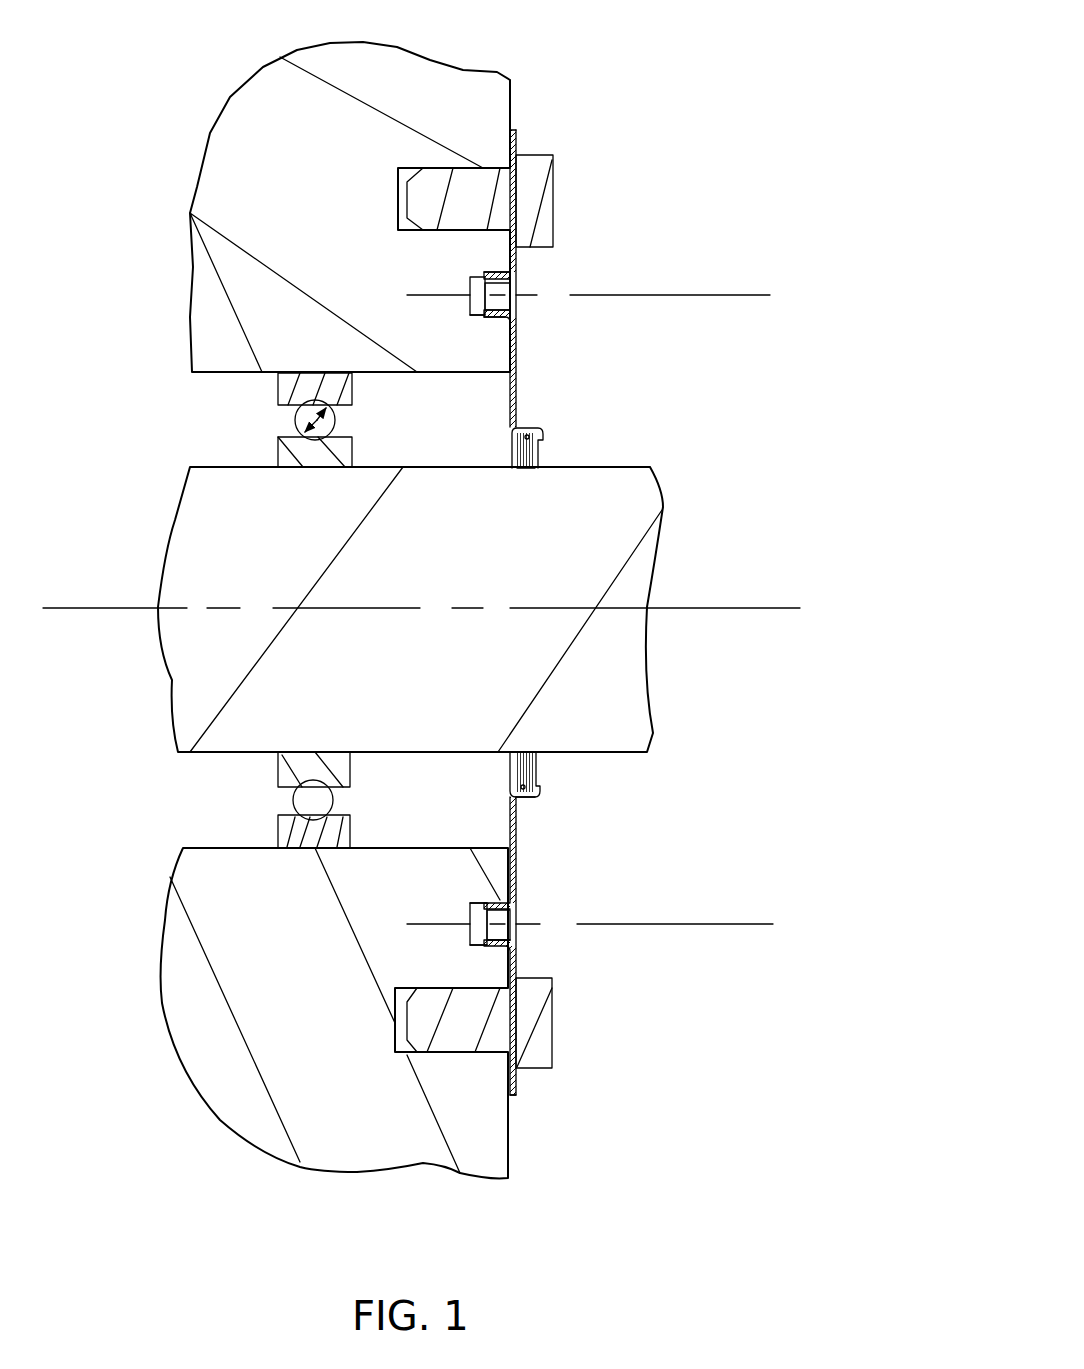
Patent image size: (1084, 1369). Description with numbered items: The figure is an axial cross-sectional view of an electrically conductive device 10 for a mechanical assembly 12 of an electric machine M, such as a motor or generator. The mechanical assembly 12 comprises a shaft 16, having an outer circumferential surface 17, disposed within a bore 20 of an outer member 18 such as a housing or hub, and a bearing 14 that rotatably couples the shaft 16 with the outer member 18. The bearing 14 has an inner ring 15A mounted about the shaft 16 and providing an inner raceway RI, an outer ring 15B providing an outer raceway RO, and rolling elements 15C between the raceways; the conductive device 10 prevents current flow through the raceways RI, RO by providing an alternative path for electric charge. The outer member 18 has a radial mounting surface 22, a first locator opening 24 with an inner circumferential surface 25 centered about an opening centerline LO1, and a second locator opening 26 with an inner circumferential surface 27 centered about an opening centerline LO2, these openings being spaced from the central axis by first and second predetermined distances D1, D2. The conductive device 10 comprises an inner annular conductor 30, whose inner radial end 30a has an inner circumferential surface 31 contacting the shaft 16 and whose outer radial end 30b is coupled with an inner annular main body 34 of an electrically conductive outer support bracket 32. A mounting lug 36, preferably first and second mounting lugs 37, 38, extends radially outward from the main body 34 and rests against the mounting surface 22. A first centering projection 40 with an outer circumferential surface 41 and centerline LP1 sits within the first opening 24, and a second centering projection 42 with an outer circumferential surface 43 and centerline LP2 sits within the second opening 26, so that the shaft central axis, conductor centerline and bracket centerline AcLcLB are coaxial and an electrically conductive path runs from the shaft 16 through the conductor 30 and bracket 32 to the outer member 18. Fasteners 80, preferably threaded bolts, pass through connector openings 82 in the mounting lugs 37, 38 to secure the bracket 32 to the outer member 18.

The electrically conductive device 10 is at (605, 368).
The mechanical assembly 12 is at (622, 170).
The bearing 14 is at (237, 395).
The inner ring 15A is at (340, 767).
The outer ring 15B is at (342, 832).
The rolling elements 15C is at (320, 798).
The shaft 16 is at (183, 503).
The outer circumferential surface 17 is at (600, 468).
The outer member 18 is at (410, 80).
The bore 20 is at (246, 836).
The radial mounting surface 22 is at (513, 117).
The first locator opening 24 is at (480, 268).
The inner circumferential surface 25 is at (477, 310).
The second locator opening 26 is at (483, 947).
The inner circumferential surface 27 is at (470, 920).
The inner annular conductor 30 is at (560, 773).
The inner radial end 30a is at (525, 753).
The outer radial end 30b is at (523, 797).
The inner circumferential surface 31 is at (528, 472).
The outer support bracket 32 is at (573, 967).
The inner annular main body 34 is at (507, 440).
The mounting lug 36 is at (520, 262).
The first mounting lug 37 is at (517, 142).
The second mounting lug 38 is at (517, 1083).
The first centering projection 40 is at (495, 318).
The outer circumferential surface 41 is at (490, 272).
The second centering projection 42 is at (497, 903).
The outer circumferential surface 43 is at (500, 947).
The fasteners 80 is at (553, 208).
The connector openings 82 is at (520, 182).
The electric machine M is at (717, 200).
The first predetermined distance D1 is at (716, 297).
The second predetermined distance D2 is at (716, 609).
The opening centerline LO1 is at (430, 297).
The opening centerline LO2 is at (437, 923).
The projection centerline LP1 is at (543, 297).
The projection centerline LP2 is at (540, 923).
The inner raceway RI is at (297, 425).
The outer raceway RO is at (333, 420).
The central axis, conductor centerline and bracket centerline AcLcLB is at (790, 610).